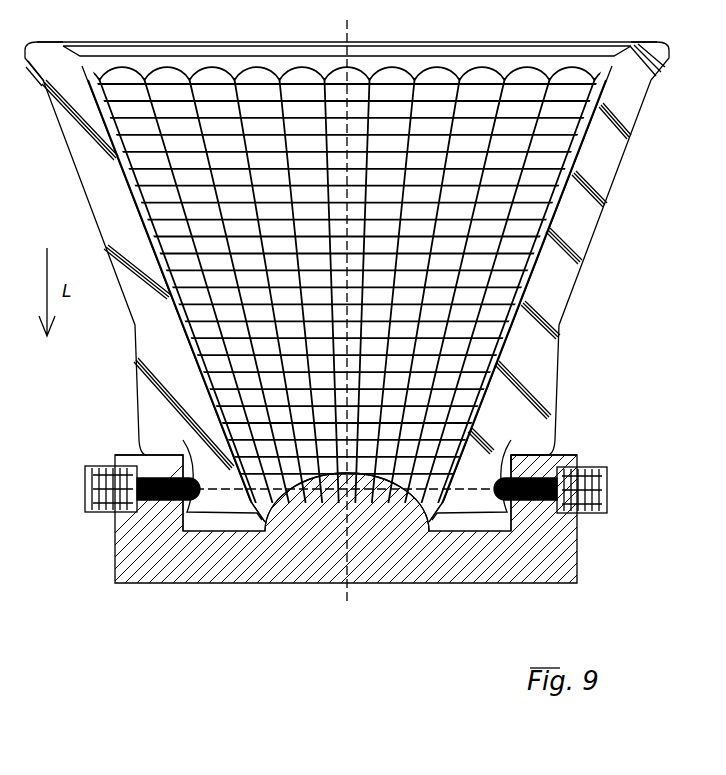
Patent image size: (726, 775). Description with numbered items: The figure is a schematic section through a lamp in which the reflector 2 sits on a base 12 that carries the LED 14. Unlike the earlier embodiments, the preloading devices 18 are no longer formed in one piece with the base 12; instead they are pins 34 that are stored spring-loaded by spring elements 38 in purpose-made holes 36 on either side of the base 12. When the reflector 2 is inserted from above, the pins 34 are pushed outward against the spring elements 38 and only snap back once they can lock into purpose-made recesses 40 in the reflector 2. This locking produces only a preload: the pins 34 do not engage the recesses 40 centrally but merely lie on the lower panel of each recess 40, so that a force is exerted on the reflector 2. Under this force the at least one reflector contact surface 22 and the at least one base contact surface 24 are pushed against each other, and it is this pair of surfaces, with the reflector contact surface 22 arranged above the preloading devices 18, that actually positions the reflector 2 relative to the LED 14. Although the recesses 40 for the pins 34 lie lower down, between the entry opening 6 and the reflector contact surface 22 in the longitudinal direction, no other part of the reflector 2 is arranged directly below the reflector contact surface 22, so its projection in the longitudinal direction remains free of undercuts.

The reflector 2 is at (585, 236).
The entry opening 6 is at (262, 535).
The base 12 is at (432, 572).
The LED 14 is at (320, 510).
The preloading devices 18 is at (556, 453).
The reflector contact surface 22 is at (522, 445).
The base contact surface 24 is at (545, 458).
The pins 34 is at (153, 500).
The holes 36 is at (607, 490).
The spring elements 38 is at (105, 468).
The recesses 40 is at (183, 440).